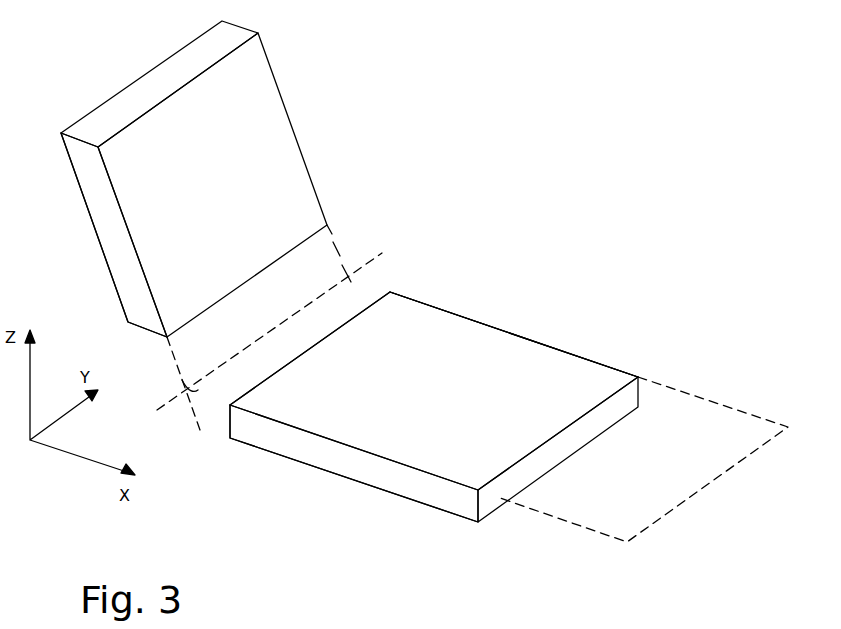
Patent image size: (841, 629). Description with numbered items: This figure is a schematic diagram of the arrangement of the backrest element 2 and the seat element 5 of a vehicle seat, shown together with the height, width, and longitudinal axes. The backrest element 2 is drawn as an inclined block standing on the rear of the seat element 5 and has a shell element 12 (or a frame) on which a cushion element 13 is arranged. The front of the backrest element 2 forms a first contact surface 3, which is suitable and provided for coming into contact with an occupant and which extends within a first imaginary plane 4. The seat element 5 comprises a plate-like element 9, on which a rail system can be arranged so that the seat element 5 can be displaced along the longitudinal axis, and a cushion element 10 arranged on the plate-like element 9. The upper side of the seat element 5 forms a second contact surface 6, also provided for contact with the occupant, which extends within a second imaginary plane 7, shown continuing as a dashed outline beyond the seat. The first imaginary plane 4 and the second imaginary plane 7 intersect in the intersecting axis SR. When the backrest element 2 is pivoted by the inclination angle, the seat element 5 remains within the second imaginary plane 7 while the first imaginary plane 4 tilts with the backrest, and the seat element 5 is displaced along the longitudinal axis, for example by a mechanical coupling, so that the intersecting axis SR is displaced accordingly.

The backrest element 2 is at (121, 267).
The first contact surface 3 is at (262, 148).
The first imaginary plane 4 is at (323, 256).
The seat element 5 is at (411, 483).
The second contact surface 6 is at (540, 358).
The second imaginary plane 7 is at (697, 413).
The plate-like element 9 is at (315, 466).
The cushion element 10 is at (469, 334).
The shell element 12 is at (80, 187).
The cushion element 13 is at (263, 76).
The intersecting axis SR is at (212, 372).